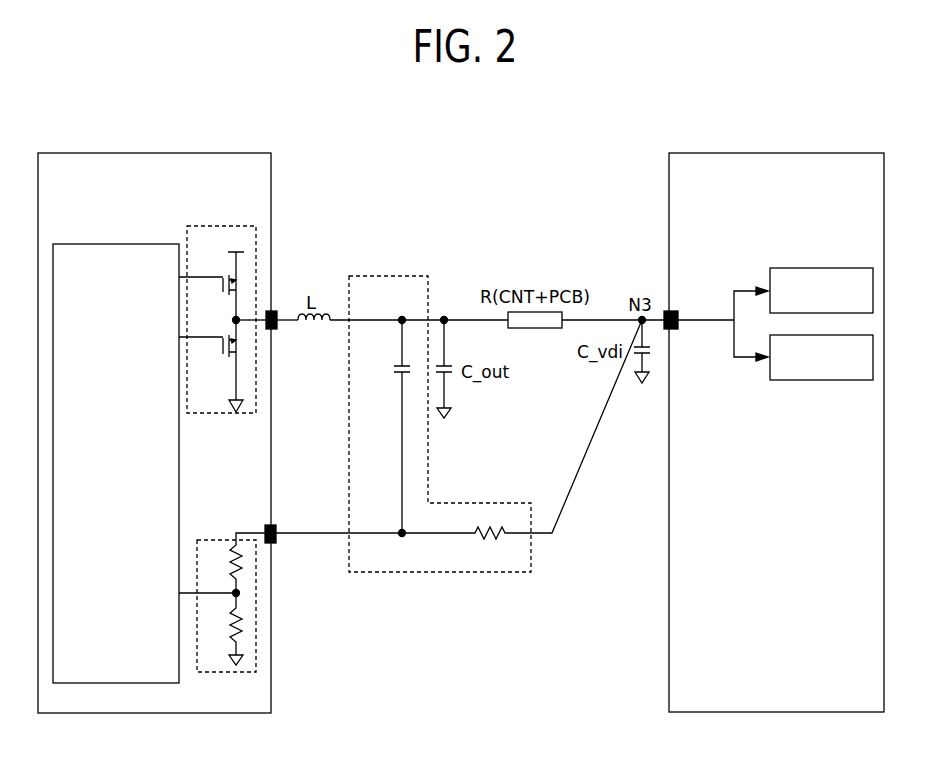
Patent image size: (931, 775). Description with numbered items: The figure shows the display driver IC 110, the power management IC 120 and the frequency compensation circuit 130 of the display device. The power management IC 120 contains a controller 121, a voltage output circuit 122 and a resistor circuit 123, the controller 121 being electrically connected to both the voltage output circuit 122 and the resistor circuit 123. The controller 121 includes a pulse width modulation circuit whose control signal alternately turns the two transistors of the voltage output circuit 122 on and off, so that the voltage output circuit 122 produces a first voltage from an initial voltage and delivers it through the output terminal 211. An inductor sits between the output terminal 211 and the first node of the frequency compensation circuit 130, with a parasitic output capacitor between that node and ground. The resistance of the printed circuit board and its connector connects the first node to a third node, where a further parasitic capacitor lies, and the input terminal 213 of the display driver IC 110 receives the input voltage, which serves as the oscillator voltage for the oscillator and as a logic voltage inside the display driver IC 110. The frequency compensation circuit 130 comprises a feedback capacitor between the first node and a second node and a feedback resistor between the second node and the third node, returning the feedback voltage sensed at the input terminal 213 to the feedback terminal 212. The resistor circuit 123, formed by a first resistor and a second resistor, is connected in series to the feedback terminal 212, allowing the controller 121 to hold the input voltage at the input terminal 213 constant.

The display driver IC 110 is at (745, 153).
The power management IC 120 is at (118, 153).
The controller 121 is at (90, 244).
The voltage output circuit 122 is at (236, 226).
The resistor circuit 123 is at (222, 540).
The frequency compensation circuit 130 is at (490, 503).
The output terminal 211 is at (273, 311).
The feedback terminal 212 is at (275, 543).
The input terminal 213 is at (665, 311).